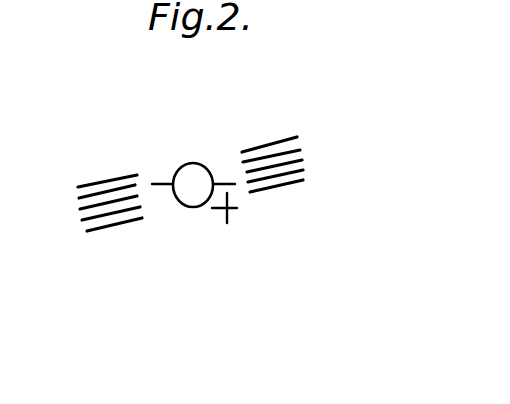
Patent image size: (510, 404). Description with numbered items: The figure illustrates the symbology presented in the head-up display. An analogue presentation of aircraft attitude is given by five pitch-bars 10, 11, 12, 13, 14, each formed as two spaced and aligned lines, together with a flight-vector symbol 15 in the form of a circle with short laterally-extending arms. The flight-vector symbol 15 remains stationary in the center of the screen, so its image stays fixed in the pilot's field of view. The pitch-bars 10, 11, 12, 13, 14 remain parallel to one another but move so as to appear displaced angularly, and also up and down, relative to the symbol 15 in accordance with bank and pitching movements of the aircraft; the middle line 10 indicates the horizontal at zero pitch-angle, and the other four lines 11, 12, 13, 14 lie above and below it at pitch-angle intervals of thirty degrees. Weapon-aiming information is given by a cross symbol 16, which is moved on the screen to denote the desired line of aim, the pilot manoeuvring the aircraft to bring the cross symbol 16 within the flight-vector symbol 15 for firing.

The pitch-bar 10 is at (298, 160).
The pitch-bar 11 is at (298, 151).
The pitch-bar 12 is at (297, 140).
The pitch-bar 13 is at (300, 172).
The pitch-bar 14 is at (297, 182).
The flight-vector symbol 15 is at (192, 163).
The cross symbol 16 is at (229, 205).